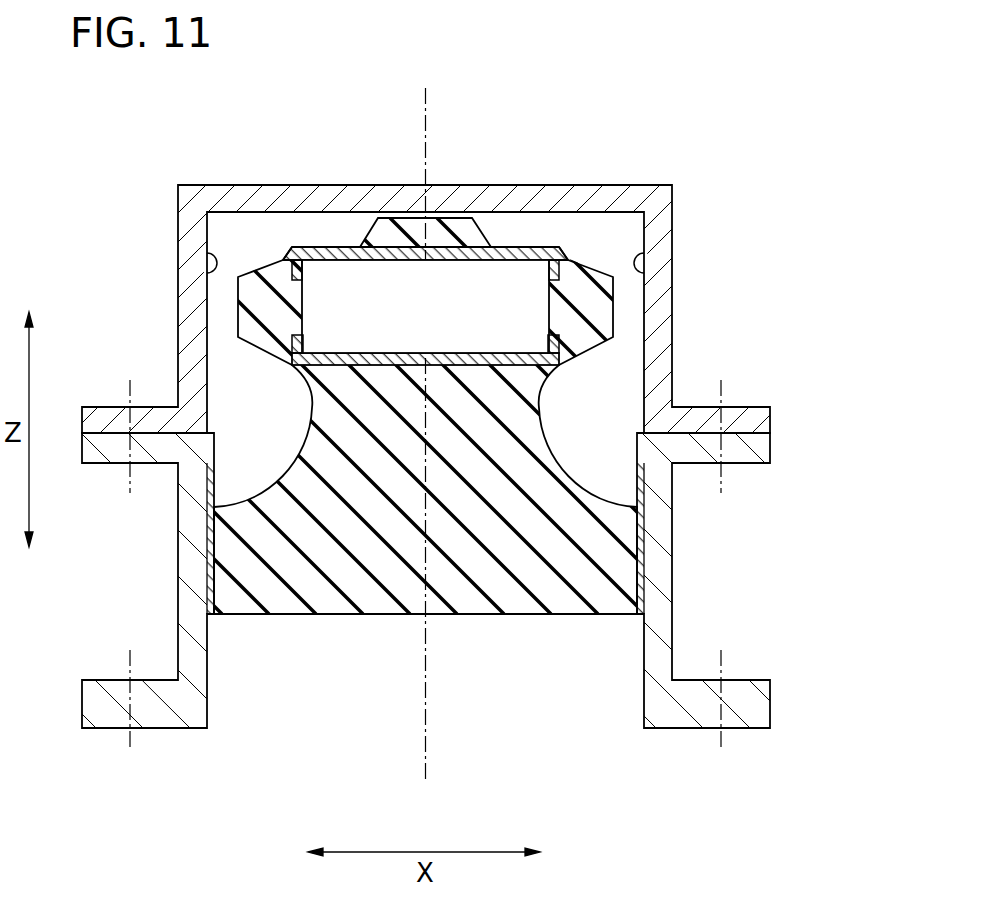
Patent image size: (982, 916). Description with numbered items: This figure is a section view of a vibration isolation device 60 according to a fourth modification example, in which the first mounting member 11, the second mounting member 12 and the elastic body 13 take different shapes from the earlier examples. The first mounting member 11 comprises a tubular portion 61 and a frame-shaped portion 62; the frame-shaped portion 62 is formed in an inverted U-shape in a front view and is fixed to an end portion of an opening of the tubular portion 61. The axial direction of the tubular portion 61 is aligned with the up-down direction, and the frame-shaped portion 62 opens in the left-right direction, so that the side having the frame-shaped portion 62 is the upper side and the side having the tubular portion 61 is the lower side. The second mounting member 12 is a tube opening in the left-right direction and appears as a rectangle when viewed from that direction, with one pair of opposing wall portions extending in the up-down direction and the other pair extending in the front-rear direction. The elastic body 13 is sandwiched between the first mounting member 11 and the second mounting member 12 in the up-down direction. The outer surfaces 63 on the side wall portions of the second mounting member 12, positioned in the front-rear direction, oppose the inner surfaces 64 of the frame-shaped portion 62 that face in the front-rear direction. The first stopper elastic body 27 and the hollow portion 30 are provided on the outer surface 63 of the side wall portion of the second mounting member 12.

The vibration isolation device 60 is at (491, 370).
The first mounting member 11 is at (491, 456).
The frame-shaped portion 62 is at (491, 309).
The tubular portion 61 is at (491, 580).
The inner surfaces 64 is at (213, 254).
The elastic body 13 is at (250, 562).
The second mounting member 12 is at (510, 247).
The first stopper elastic body 27 is at (258, 312).
The hollow portion 30 is at (303, 272).
The outer surfaces 63 is at (278, 258).